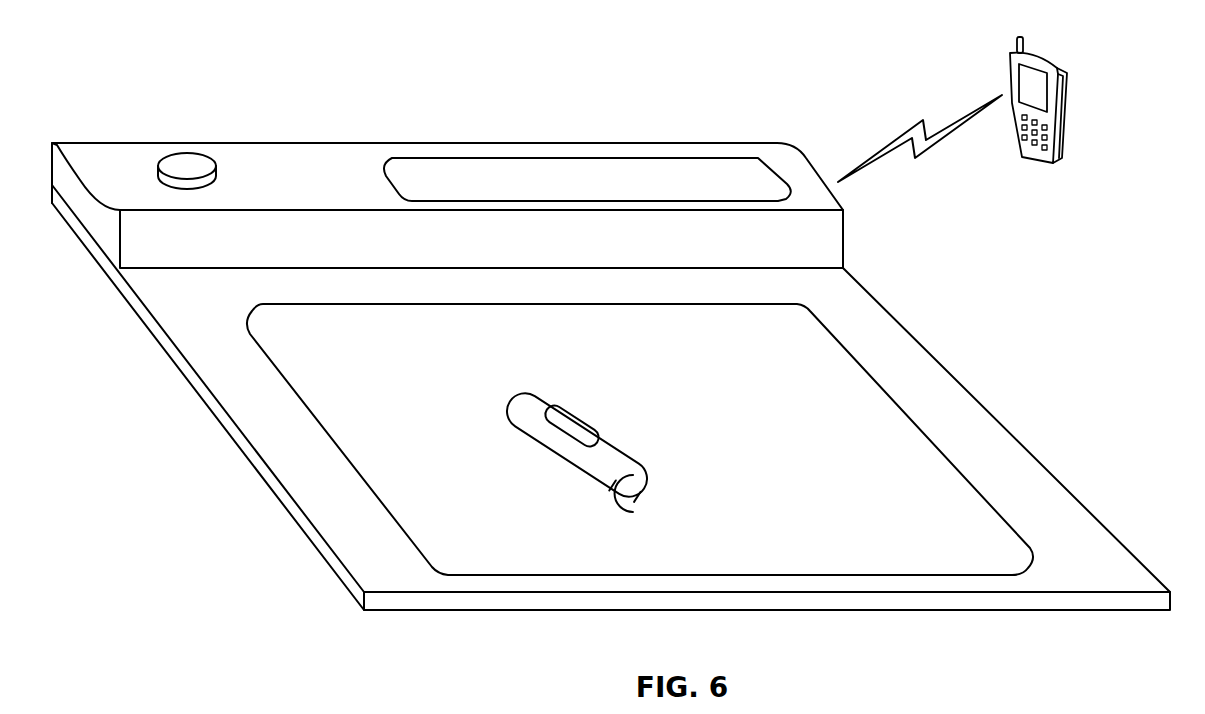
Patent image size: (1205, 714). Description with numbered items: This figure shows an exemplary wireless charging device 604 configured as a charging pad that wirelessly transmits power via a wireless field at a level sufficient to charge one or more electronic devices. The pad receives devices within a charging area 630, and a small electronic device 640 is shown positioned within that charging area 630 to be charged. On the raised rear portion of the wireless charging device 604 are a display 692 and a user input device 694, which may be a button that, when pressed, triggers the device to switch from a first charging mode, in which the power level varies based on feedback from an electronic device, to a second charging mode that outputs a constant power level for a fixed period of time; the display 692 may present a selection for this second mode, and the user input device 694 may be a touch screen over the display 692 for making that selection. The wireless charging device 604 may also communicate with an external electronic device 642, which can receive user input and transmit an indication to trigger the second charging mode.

The wireless charging device 604 is at (168, 58).
The user input device 694 is at (187, 152).
The display 692 is at (450, 157).
The charging area 630 is at (570, 304).
The small electronic device 640 is at (577, 392).
The external electronic device 642 is at (1067, 68).